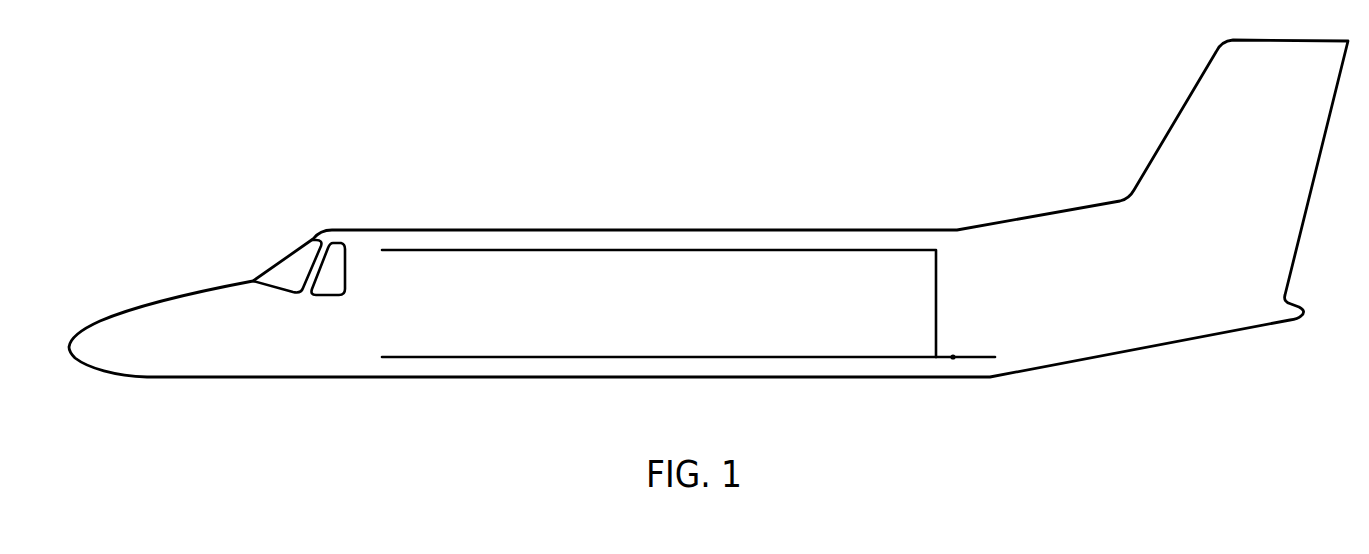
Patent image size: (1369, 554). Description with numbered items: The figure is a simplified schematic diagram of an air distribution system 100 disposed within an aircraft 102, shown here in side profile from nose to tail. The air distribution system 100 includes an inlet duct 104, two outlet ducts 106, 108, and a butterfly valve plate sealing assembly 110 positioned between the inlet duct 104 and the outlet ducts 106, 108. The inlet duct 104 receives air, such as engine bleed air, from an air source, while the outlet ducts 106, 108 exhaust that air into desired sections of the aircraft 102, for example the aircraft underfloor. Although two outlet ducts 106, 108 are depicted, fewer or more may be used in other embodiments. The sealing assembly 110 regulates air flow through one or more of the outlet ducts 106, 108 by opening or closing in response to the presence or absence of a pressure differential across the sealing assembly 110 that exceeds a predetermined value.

The air distribution system 100 is at (708, 227).
The aircraft 102 is at (805, 230).
The inlet duct 104 is at (977, 357).
The outlet duct 106 is at (667, 250).
The outlet duct 108 is at (837, 358).
The butterfly valve plate sealing assembly 110 is at (953, 357).